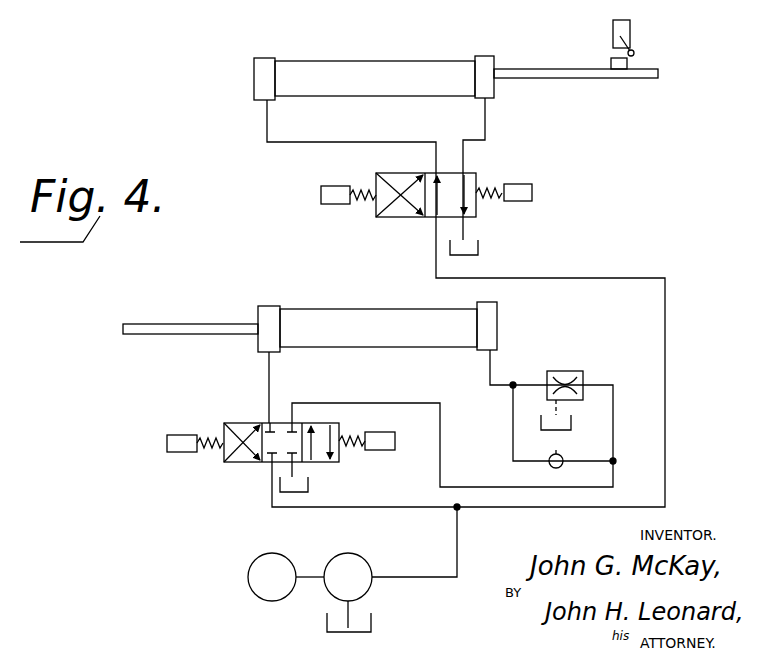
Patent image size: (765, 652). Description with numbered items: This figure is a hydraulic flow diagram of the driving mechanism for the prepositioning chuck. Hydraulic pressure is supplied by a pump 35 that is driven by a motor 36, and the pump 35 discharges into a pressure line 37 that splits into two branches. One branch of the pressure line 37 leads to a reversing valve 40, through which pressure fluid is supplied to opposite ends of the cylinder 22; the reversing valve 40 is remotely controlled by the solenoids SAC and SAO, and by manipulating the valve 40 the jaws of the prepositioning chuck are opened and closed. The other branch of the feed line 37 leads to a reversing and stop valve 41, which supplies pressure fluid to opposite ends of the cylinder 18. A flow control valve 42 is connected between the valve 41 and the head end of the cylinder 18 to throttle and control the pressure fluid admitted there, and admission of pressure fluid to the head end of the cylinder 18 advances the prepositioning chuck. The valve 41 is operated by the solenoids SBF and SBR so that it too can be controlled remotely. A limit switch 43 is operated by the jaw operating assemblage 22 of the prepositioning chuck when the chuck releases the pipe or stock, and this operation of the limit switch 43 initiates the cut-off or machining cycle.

The cylinder 18 is at (345, 300).
The cylinder 22 is at (428, 60).
The pump 35 is at (362, 566).
The motor 36 is at (262, 598).
The pressure line 37 is at (666, 388).
The reversing valve 40 is at (400, 218).
The reversing and stop valve 41 is at (243, 421).
The flow control valve 42 is at (577, 378).
The limit switch 43 is at (632, 30).
The solenoid SAC is at (355, 176).
The solenoid SAO is at (512, 184).
The solenoid SBF is at (165, 455).
The solenoid SBR is at (373, 452).